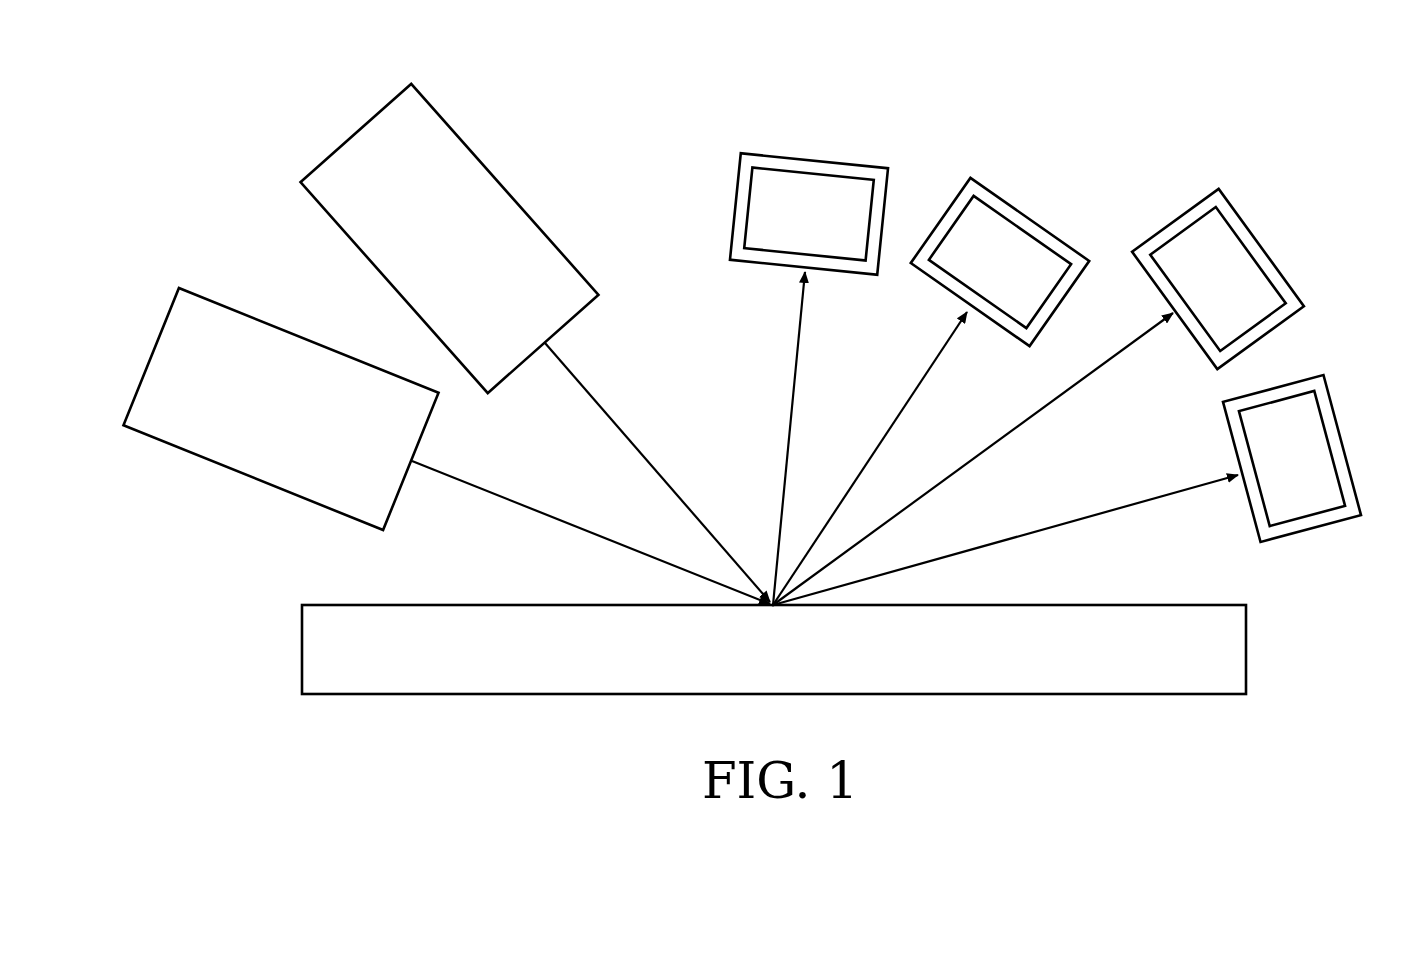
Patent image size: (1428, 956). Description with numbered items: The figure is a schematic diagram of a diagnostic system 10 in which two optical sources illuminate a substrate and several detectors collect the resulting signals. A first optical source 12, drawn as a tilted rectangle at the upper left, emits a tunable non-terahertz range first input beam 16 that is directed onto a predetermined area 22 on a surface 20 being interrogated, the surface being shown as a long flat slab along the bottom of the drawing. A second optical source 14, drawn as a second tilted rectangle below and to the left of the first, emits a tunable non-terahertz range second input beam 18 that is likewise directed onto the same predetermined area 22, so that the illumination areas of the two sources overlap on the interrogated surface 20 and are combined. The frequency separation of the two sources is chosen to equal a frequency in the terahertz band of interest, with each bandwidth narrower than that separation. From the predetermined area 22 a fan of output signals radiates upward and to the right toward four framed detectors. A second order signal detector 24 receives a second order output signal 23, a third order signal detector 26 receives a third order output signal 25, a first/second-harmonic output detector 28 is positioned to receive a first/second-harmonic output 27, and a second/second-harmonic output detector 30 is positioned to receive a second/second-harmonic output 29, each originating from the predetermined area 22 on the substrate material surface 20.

The diagnostic system 10 is at (688, 330).
The first optical source 12 is at (435, 107).
The second optical source 14 is at (158, 440).
The first input beam 16 is at (603, 412).
The second input beam 18 is at (493, 495).
The surface 20 is at (1230, 643).
The predetermined area 22 is at (772, 597).
The second order output signal 23 is at (788, 408).
The second order signal detector 24 is at (810, 157).
The third order output signal 25 is at (900, 410).
The third order signal detector 26 is at (1022, 208).
The first/second-harmonic output 27 is at (1020, 427).
The first/second-harmonic output detector 28 is at (1255, 232).
The second/second-harmonic output 29 is at (1122, 503).
The second/second-harmonic output detector 30 is at (1343, 432).